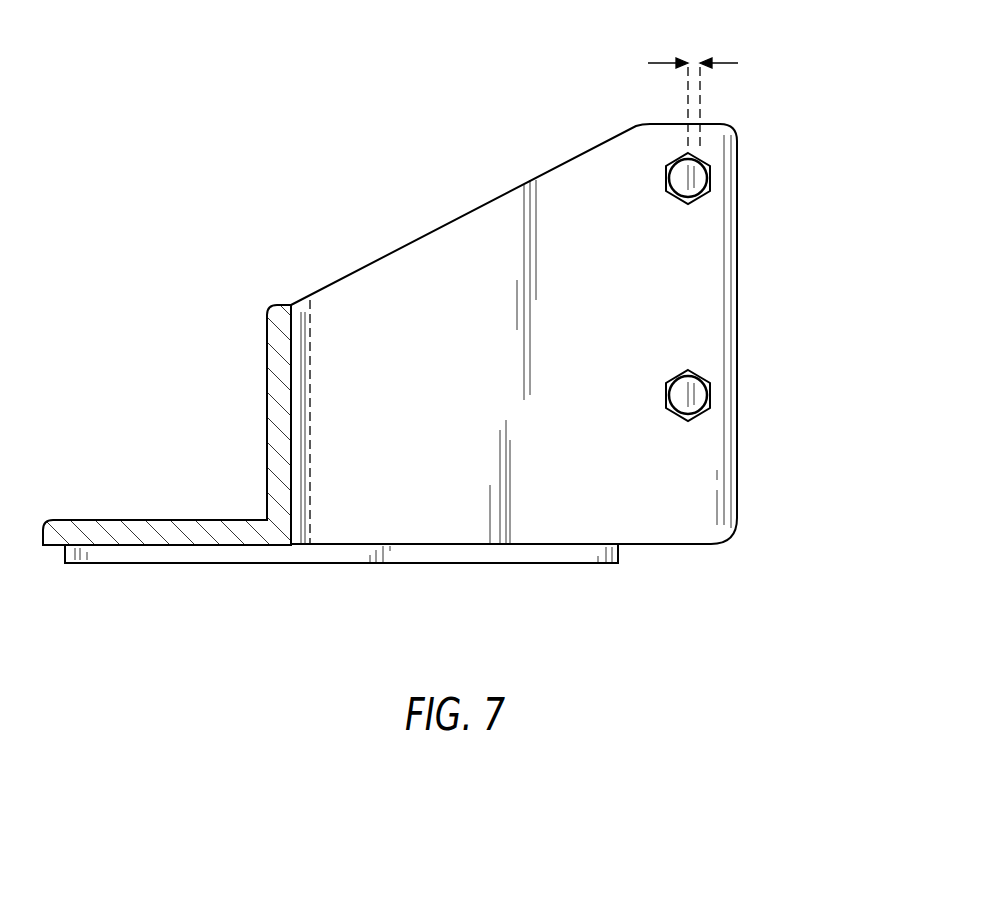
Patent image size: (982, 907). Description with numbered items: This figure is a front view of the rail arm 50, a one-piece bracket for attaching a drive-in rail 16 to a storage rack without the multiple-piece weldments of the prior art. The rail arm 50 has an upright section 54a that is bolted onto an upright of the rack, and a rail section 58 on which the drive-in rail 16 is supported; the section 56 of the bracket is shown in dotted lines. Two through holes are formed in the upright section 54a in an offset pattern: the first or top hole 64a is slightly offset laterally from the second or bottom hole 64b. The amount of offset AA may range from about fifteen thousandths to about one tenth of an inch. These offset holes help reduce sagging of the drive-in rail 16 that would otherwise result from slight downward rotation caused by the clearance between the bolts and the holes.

The drive-in rail 16 is at (114, 520).
The rail arm 50 is at (433, 229).
The upright section 54a is at (704, 296).
The section 56 is at (310, 340).
The rail section 58 is at (480, 565).
The first or top hole 64a is at (707, 178).
The second or bottom hole 64b is at (707, 395).
The amount of offset AA is at (722, 60).